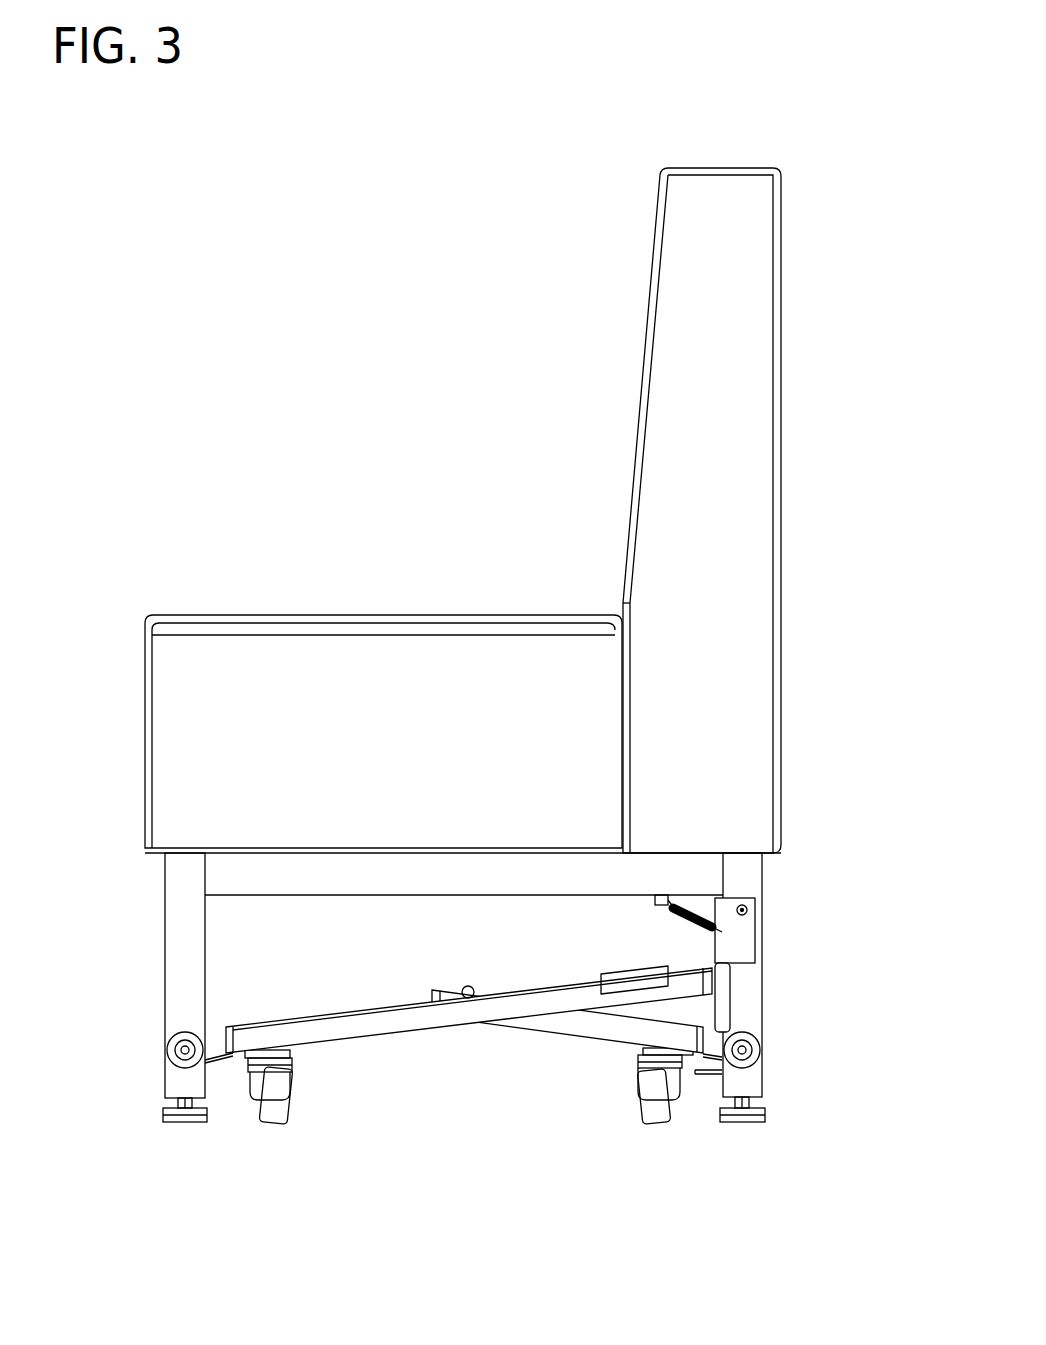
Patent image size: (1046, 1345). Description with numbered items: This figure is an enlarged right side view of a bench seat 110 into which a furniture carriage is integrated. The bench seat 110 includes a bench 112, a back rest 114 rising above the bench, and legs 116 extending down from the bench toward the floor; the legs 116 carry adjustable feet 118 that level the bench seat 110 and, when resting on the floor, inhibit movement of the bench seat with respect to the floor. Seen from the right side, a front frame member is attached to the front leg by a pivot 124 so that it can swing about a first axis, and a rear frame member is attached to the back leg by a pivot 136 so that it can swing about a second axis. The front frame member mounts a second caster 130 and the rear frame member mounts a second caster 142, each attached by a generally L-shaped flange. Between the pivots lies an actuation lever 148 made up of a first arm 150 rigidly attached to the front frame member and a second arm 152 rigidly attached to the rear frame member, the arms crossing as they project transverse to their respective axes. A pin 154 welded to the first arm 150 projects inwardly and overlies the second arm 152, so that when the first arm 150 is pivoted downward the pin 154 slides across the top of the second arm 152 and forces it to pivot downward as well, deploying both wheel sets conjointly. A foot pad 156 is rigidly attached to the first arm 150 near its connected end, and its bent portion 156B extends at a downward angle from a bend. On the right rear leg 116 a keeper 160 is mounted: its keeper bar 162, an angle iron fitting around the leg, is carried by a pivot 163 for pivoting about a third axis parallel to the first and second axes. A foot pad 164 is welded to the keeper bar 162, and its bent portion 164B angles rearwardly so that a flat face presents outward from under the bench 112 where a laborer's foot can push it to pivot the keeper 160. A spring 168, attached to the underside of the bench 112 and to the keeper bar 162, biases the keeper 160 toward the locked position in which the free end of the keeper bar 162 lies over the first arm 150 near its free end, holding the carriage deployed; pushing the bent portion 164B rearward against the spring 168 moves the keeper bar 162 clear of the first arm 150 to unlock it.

The bench seat 110 is at (110, 620).
The bench 112 is at (327, 612).
The back rest 114 is at (785, 298).
The legs 116 is at (172, 890).
The feet 118 is at (172, 1110).
The pivots 124 is at (183, 1040).
The second caster 130 is at (262, 1065).
The pivots 136 is at (757, 1058).
The second caster 142 is at (688, 1072).
The actuation lever 148 is at (438, 1128).
The first arm 150 is at (318, 1025).
The second arm 152 is at (538, 1030).
The pin 154 is at (465, 985).
The foot pad 156 is at (650, 1008).
The bent portion 156B is at (618, 986).
The keeper 160 is at (760, 960).
The keeper bar 162 is at (784, 915).
The pivot 163 is at (747, 905).
The foot pad 164 is at (740, 1046).
The bent portion 164B is at (725, 987).
The spring 168 is at (700, 915).